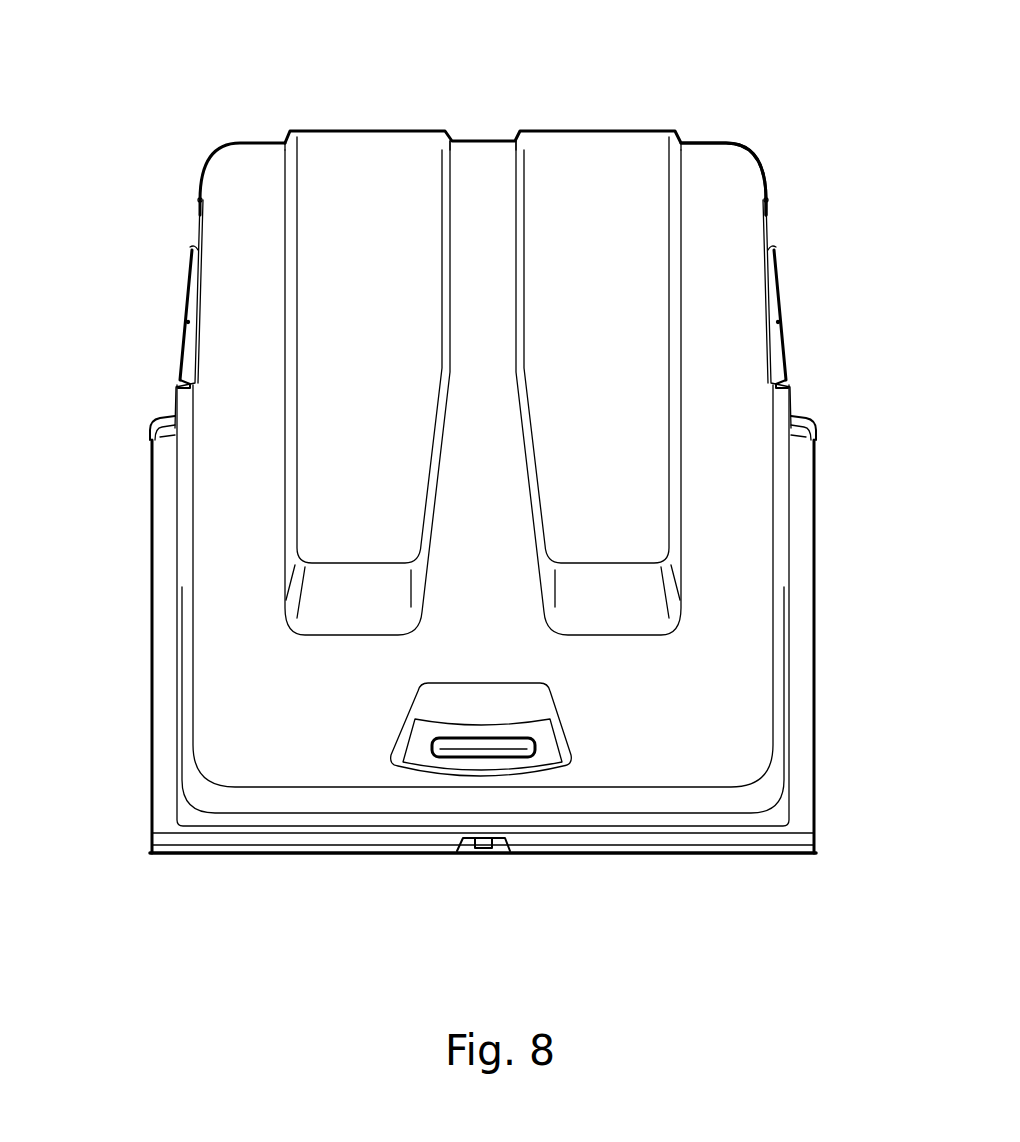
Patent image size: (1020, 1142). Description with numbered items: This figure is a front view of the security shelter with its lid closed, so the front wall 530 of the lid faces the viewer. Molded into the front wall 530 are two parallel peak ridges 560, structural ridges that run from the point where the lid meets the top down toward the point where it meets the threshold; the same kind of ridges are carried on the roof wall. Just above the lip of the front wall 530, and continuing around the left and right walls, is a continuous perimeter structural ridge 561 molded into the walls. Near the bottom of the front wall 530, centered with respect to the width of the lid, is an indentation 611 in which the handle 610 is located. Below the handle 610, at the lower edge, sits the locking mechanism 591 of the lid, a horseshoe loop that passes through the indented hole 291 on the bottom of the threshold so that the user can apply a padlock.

The perimeter structural ridge 561 is at (718, 152).
The parallel peak ridges 560 is at (617, 533).
The front wall 530 is at (757, 740).
The indented hole 291 is at (465, 853).
The locking mechanism 591 is at (483, 855).
The handle recess 611 is at (547, 708).
The handle 610 is at (518, 747).